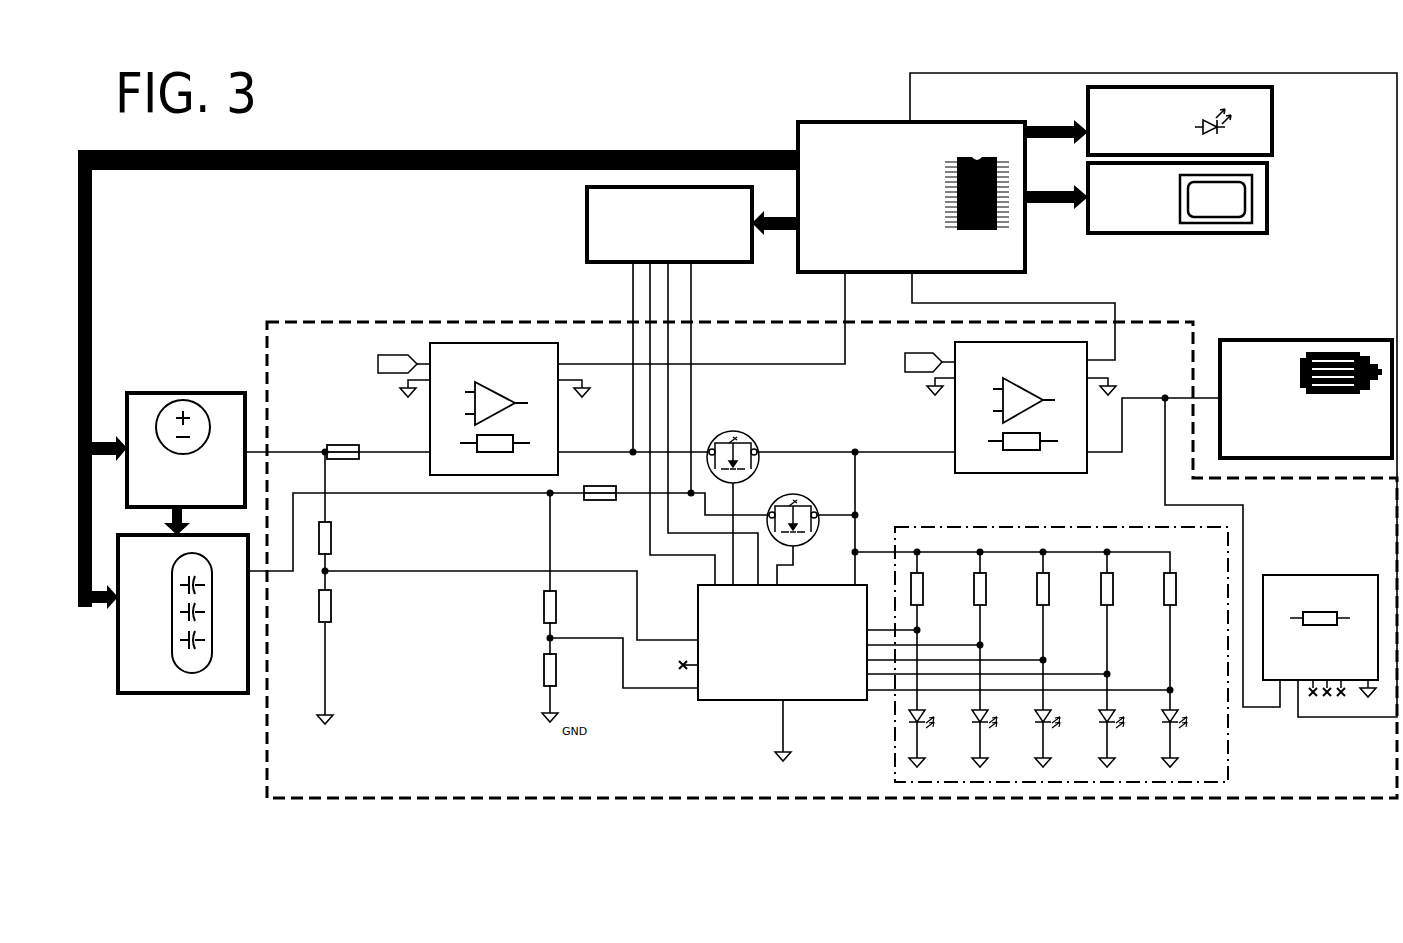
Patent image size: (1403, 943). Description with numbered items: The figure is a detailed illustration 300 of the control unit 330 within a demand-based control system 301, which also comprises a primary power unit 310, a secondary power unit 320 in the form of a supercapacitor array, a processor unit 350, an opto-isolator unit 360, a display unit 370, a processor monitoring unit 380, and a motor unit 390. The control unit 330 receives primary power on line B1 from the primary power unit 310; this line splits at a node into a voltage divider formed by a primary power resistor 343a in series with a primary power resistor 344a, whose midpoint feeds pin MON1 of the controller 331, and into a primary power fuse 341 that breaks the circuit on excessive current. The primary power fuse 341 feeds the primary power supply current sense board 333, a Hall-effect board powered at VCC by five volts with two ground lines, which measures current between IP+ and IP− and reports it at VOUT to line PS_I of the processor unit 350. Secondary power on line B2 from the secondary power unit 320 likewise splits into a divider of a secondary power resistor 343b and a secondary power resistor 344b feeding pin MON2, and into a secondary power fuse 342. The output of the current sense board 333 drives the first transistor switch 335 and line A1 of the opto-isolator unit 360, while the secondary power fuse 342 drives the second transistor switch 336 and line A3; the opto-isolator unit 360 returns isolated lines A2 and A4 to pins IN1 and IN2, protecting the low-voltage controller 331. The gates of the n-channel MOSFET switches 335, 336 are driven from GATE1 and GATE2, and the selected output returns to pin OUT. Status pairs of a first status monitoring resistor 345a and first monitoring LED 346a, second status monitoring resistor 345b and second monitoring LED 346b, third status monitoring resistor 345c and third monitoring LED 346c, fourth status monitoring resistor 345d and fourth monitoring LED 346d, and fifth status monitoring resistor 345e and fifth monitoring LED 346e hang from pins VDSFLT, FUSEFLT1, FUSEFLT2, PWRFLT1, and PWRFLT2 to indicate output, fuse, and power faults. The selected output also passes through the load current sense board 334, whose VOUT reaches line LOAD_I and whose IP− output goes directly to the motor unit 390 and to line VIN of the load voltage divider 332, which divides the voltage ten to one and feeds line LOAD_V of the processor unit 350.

The illustration 300 is at (733, 108).
The demand-based control system 301 is at (583, 452).
The primary power unit 310 is at (186, 450).
The secondary power unit 320 is at (183, 614).
The control unit 330 is at (832, 560).
The controller 331 is at (783, 644).
The load voltage divider 332 is at (1320, 642).
The primary power supply current sense board 333 is at (484, 409).
The load current sense board 334 is at (1010, 407).
The first transistor switch 335 is at (732, 451).
The second transistor switch 336 is at (792, 512).
The primary power fuse 341 is at (352, 439).
The secondary power fuse 342 is at (609, 481).
The primary power resistor 343a is at (352, 538).
The secondary power resistor 343b is at (527, 607).
The primary power resistor 344a is at (352, 606).
The secondary power resistor 344b is at (527, 670).
The first status monitoring resistor 345a is at (939, 601).
The second status monitoring resistor 345b is at (1001, 601).
The third status monitoring resistor 345c is at (1064, 601).
The fourth status monitoring resistor 345d is at (1128, 601).
The fifth status monitoring resistor 345e is at (1192, 601).
The first monitoring LED 346a is at (937, 733).
The second monitoring LED 346b is at (1000, 733).
The third monitoring LED 346c is at (1062, 733).
The fourth monitoring LED 346d is at (1127, 733).
The fifth monitoring LED 346e is at (1190, 733).
The processor unit 350 is at (911, 197).
The opto-isolator unit 360 is at (669, 224).
The display unit 370 is at (1177, 198).
The processor monitoring unit 380 is at (1180, 121).
The motor unit 390 is at (1306, 399).